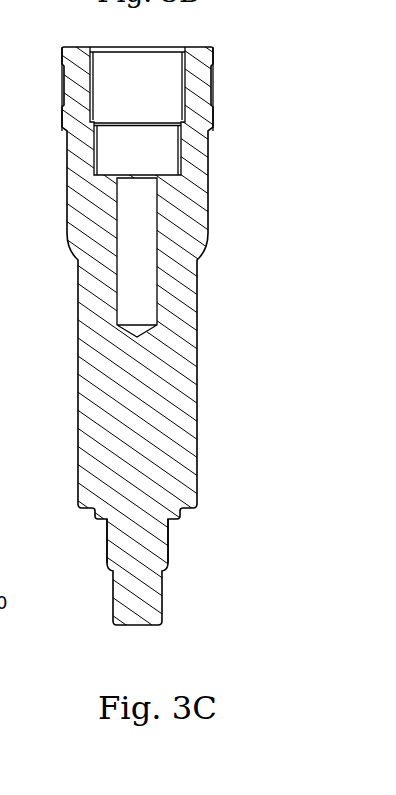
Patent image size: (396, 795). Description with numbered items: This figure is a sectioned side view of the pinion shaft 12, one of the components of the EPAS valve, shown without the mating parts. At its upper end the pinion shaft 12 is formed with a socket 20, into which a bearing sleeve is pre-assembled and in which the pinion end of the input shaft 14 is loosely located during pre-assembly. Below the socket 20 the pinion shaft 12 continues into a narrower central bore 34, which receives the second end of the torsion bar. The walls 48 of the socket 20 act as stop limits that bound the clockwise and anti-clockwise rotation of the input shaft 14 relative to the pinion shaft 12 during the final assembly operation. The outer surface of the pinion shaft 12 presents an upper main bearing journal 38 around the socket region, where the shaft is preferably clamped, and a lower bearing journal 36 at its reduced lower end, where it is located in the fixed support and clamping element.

The pinion shaft 12 is at (198, 397).
The input shaft 14 is at (198, 397).
The socket 20 is at (187, 153).
The central bore 34 is at (147, 283).
The lower bearing journal 36 is at (171, 552).
The upper main bearing journal 38 is at (62, 87).
The walls of socket 48 is at (178, 68).